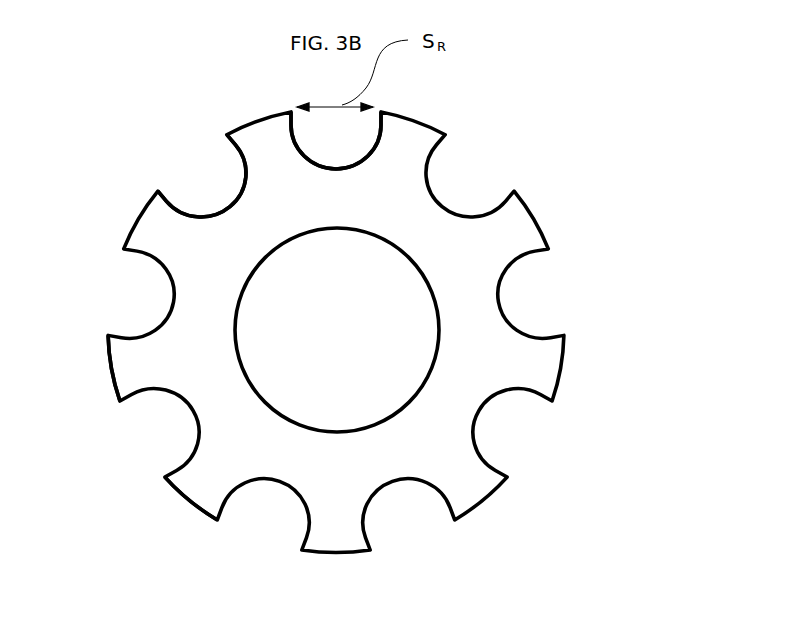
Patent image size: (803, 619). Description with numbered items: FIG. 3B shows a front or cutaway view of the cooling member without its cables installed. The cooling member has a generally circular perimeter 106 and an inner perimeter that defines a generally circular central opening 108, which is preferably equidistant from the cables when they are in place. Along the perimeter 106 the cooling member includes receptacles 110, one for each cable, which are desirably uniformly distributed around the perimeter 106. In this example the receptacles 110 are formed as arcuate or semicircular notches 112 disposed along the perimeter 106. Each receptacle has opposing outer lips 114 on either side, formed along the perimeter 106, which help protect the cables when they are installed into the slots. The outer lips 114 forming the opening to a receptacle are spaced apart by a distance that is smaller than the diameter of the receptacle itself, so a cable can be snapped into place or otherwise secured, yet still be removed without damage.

The circular perimeter 106 is at (487, 505).
The central opening 108 is at (363, 328).
The receptacles 110 is at (343, 124).
The notches 112 is at (232, 192).
The outer lips 114 is at (118, 411).